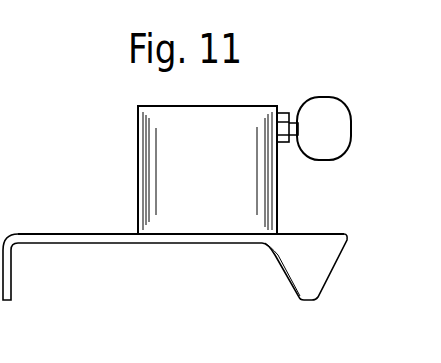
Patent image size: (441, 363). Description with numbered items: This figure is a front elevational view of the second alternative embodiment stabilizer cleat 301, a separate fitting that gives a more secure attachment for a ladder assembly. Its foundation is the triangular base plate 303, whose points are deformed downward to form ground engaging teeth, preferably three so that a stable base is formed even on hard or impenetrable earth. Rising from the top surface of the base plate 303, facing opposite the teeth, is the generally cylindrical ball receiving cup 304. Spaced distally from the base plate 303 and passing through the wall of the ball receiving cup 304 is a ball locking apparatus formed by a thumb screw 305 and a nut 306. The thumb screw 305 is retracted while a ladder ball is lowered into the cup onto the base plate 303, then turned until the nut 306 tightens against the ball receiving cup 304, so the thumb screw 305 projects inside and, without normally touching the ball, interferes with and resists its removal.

The stabilizer cleat 301 is at (133, 140).
The base plate 303 is at (70, 240).
The ball receiving cup 304 is at (158, 210).
The thumb screw 305 is at (323, 107).
The nut 306 is at (287, 113).